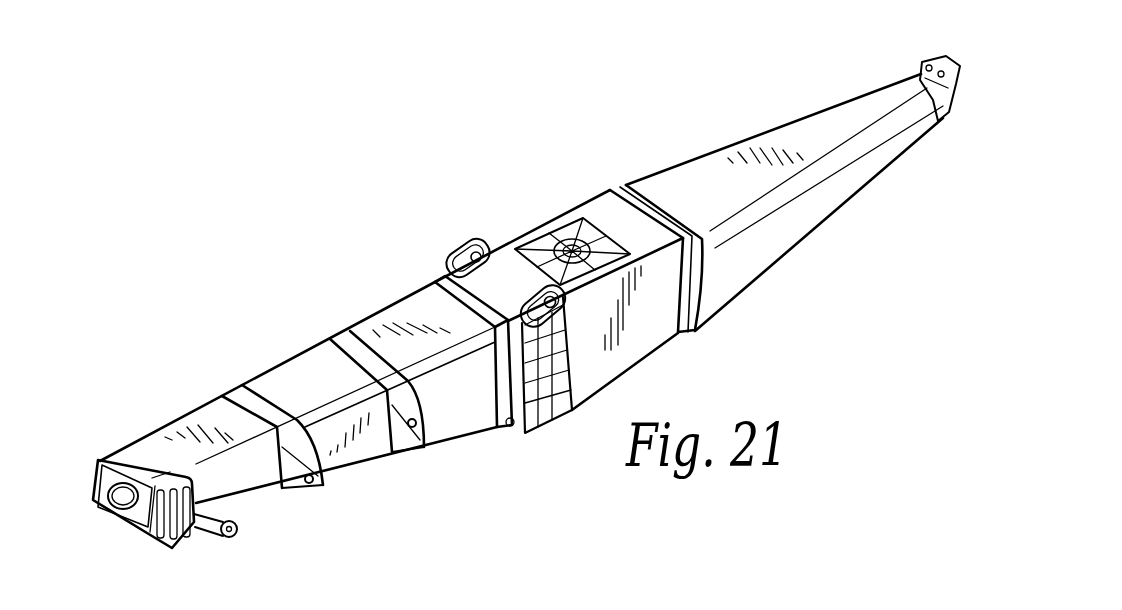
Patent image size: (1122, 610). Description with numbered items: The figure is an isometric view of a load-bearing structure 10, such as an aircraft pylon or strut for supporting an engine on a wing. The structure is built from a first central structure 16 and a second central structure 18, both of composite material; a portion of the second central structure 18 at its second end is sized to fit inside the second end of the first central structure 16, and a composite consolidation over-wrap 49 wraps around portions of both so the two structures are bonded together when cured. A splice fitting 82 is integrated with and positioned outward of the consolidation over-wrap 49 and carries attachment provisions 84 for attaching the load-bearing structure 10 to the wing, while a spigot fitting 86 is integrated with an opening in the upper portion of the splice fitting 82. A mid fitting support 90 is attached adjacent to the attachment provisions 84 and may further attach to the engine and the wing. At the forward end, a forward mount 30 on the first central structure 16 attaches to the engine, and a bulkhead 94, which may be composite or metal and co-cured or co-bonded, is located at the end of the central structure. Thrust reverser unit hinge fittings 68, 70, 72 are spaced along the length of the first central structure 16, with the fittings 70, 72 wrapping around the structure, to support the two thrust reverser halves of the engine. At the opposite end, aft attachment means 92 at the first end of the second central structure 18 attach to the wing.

The load-bearing structure 10 is at (362, 191).
The first central structure 16 is at (290, 380).
The second central structure 18 is at (773, 143).
The forward mount 30 is at (137, 457).
The composite consolidation over-wrap 49 is at (433, 300).
The thrust reverser unit hinge fitting 68 is at (228, 538).
The thrust reverser unit hinge fitting 70 is at (310, 488).
The thrust reverser unit hinge fitting 72 is at (404, 452).
The splice fitting 82 is at (647, 332).
The attachment provisions 84 is at (535, 282).
The spigot fitting 86 is at (558, 227).
The mid fitting support 90 is at (549, 410).
The aft attachment means 92 is at (950, 108).
The bulkhead 94 is at (122, 472).